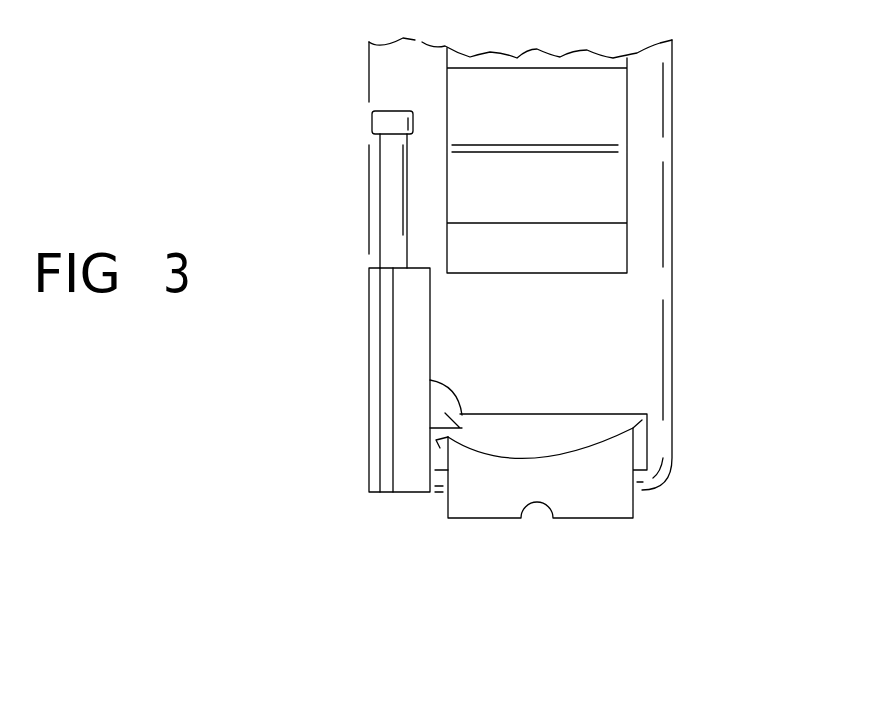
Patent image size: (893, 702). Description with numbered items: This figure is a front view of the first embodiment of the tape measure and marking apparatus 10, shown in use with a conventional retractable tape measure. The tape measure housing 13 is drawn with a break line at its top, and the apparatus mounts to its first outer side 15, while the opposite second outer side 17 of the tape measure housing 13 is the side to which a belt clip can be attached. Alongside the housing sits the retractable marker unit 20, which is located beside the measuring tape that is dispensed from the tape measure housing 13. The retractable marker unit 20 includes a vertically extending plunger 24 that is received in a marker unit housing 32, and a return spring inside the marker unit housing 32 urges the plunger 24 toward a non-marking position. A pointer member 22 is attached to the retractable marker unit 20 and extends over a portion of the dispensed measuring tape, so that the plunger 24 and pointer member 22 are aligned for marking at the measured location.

The tape measure and marking apparatus 10 is at (328, 270).
The tape measure housing 13 is at (595, 330).
The first outer side 15 is at (368, 72).
The second outer side 17 is at (672, 155).
The retractable marker unit 20 is at (369, 363).
The pointer member 22 is at (462, 415).
The plunger 24 is at (387, 182).
The marker unit housing 32 is at (410, 470).